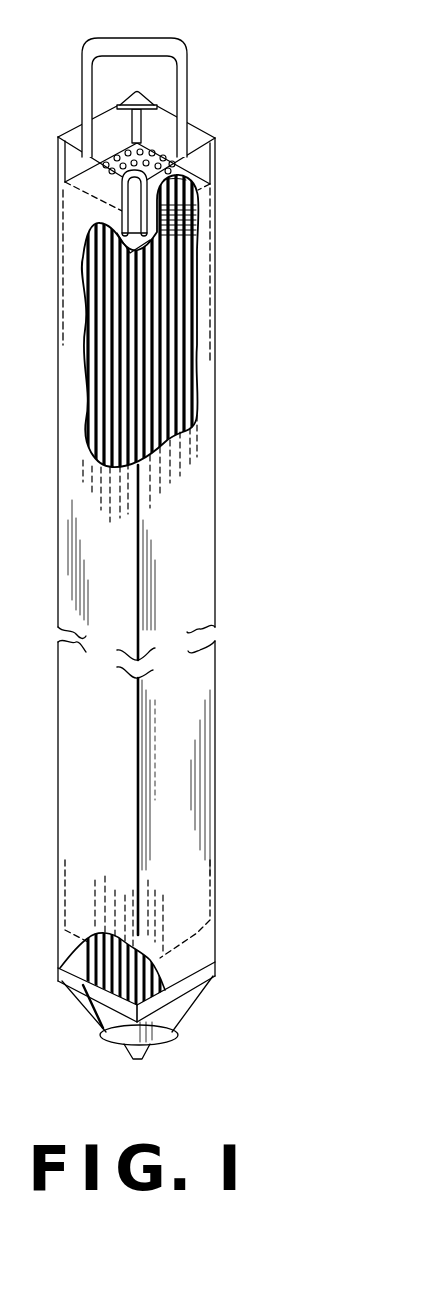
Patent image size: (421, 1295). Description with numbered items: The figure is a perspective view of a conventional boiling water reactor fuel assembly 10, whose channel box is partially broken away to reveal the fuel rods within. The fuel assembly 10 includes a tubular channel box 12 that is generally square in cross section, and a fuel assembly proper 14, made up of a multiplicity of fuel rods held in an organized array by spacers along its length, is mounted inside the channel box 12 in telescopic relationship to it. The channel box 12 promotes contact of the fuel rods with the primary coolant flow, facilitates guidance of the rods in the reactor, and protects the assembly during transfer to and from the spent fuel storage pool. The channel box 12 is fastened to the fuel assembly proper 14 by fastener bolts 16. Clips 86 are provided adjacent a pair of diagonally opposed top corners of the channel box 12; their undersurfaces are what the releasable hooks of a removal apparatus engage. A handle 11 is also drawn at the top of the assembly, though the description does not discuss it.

The fuel assembly 10 is at (179, 530).
The handle 11 is at (175, 52).
The channel box 12 is at (217, 514).
The fuel assembly proper 14 is at (180, 355).
The fastener bolts 16 is at (148, 174).
The clips 86 is at (140, 98).